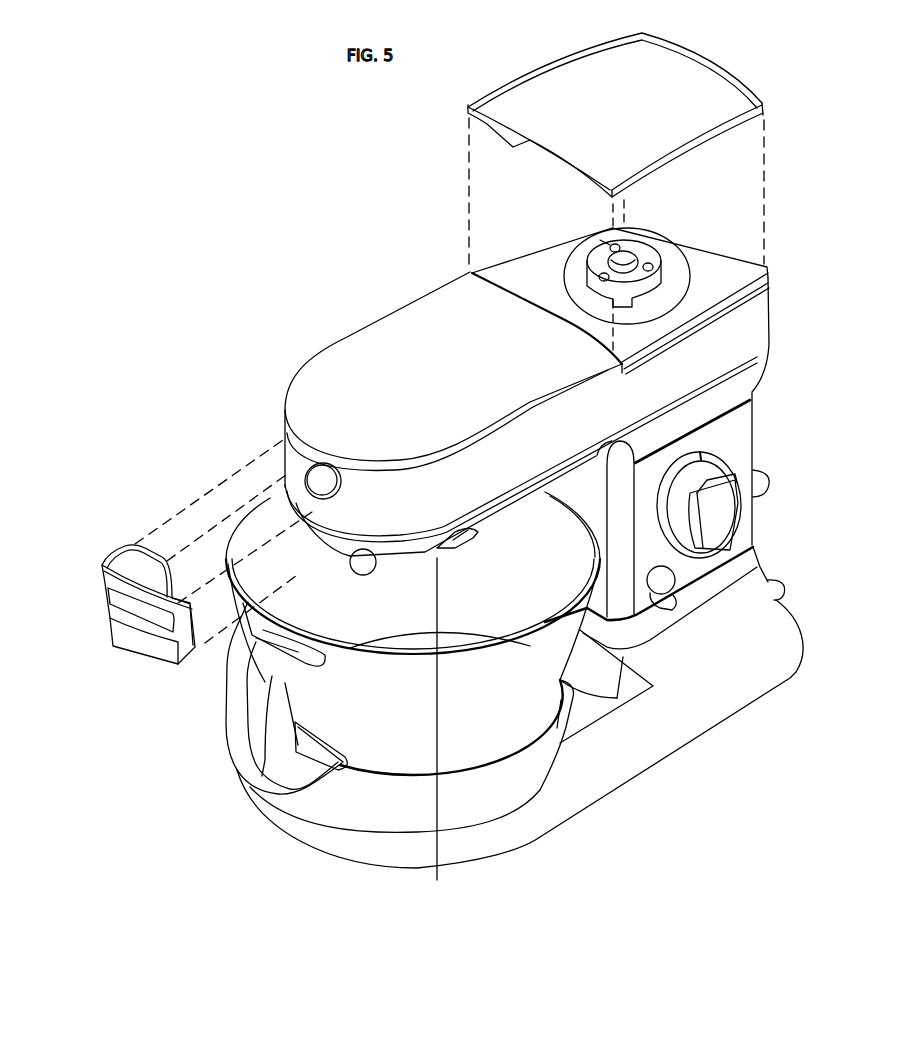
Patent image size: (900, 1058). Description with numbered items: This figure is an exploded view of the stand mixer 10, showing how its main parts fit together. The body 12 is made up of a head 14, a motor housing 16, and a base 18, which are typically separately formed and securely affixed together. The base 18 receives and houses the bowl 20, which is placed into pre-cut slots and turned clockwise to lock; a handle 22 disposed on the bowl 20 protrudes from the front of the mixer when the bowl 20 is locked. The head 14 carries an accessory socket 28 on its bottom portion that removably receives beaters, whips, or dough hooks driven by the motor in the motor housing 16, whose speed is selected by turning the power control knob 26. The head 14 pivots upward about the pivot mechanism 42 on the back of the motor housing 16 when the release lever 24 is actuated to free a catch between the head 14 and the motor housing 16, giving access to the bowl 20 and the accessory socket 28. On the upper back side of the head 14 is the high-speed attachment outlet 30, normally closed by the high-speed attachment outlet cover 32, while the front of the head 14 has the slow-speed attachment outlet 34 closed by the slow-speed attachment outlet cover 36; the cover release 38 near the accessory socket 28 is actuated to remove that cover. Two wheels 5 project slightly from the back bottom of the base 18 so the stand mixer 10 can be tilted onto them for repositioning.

The stand mixer 10 is at (385, 240).
The body 12 is at (752, 330).
The head 14 is at (343, 372).
The motor housing 16 is at (733, 438).
The base 18 is at (793, 640).
The bowl 20 is at (477, 740).
The handle 22 is at (280, 773).
The release lever 24 is at (670, 607).
The power control knob 26 is at (728, 527).
The accessory socket 28 is at (434, 732).
The high-speed attachment outlet 30 is at (680, 272).
The high-speed attachment outlet cover 32 is at (680, 72).
The slow-speed attachment outlet 34 is at (309, 465).
The slow-speed attachment outlet cover 36 is at (100, 580).
The slow-speed attachment outlet cover release 38 is at (351, 559).
The pivot mechanism 42 is at (771, 485).
The wheel 5 is at (786, 588).